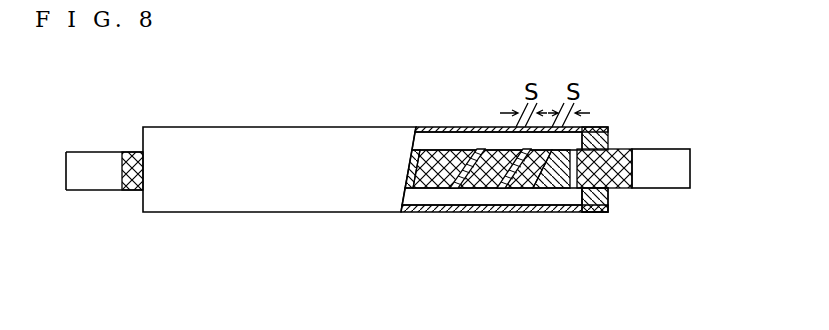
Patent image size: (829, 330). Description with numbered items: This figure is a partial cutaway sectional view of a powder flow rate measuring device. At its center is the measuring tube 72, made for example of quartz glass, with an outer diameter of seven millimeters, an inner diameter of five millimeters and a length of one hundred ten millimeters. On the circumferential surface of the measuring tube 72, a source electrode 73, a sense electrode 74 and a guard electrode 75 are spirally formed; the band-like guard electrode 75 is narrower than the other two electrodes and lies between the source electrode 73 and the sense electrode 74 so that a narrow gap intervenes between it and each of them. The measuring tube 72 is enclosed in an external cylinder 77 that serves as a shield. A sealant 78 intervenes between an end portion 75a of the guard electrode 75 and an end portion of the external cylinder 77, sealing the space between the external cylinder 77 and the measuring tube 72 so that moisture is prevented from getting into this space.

The measuring tube 72 is at (667, 158).
The source electrode 73 is at (473, 188).
The sense electrode 74 is at (410, 188).
The guard electrode 75 is at (473, 148).
The end portion of the guard electrode 75a is at (128, 191).
The external cylinder 77 is at (433, 127).
The sealant 78 is at (612, 193).